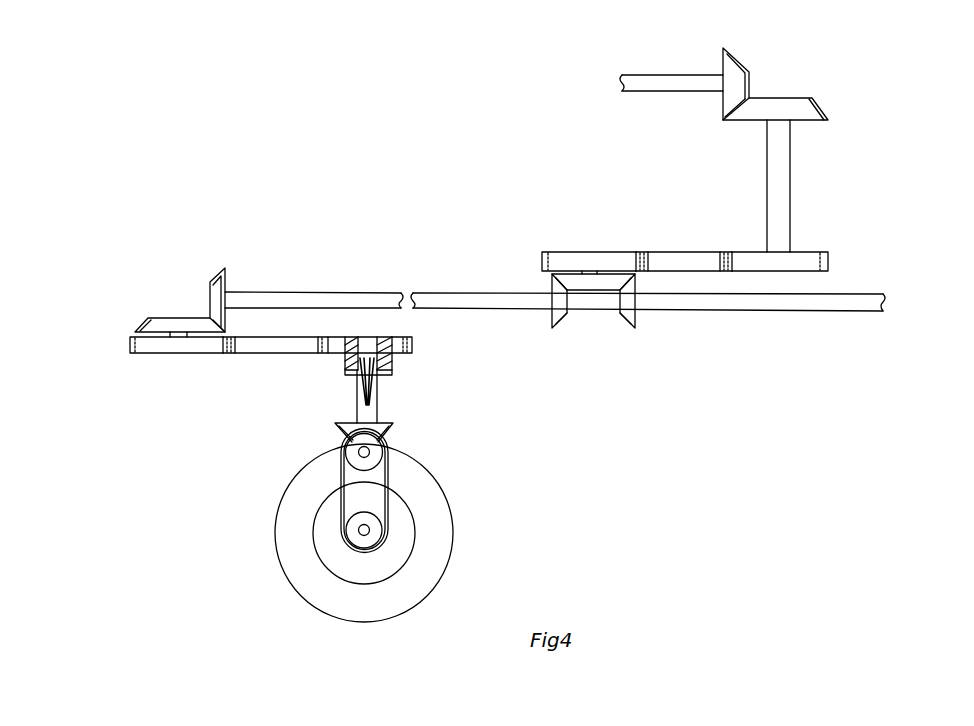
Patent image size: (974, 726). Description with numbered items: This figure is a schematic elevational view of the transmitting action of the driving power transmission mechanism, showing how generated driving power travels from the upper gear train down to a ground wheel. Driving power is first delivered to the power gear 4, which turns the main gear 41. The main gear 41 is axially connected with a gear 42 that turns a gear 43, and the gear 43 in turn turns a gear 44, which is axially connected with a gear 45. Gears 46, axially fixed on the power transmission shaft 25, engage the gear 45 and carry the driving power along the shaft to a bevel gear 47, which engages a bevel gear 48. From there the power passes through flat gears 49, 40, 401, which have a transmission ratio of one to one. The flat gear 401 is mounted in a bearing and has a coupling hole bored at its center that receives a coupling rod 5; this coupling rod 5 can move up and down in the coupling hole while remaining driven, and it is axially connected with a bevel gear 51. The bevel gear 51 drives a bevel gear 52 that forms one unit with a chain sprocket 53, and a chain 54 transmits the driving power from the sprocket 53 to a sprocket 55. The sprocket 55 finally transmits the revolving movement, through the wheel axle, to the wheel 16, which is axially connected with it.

The power gear 4 is at (768, 76).
The main gear 41 is at (802, 75).
The gear 42 is at (832, 232).
The gear 43 is at (693, 234).
The gear 44 is at (591, 232).
The gear 45 is at (619, 241).
The gears 46 is at (637, 339).
The power transmission shaft 25 is at (562, 220).
The bevel gear 47 is at (180, 280).
The bevel gear 48 is at (151, 301).
The flat gear 49 is at (156, 366).
The flat gear 40 is at (303, 369).
The flat gear 401 is at (421, 345).
The coupling rod 5 is at (322, 392).
The bevel gear 51 is at (317, 443).
The bevel gear 52 is at (436, 424).
The chain sprocket 53 is at (388, 445).
The chain 54 is at (424, 491).
The sprocket 55 is at (427, 519).
The wheel 16 is at (325, 533).